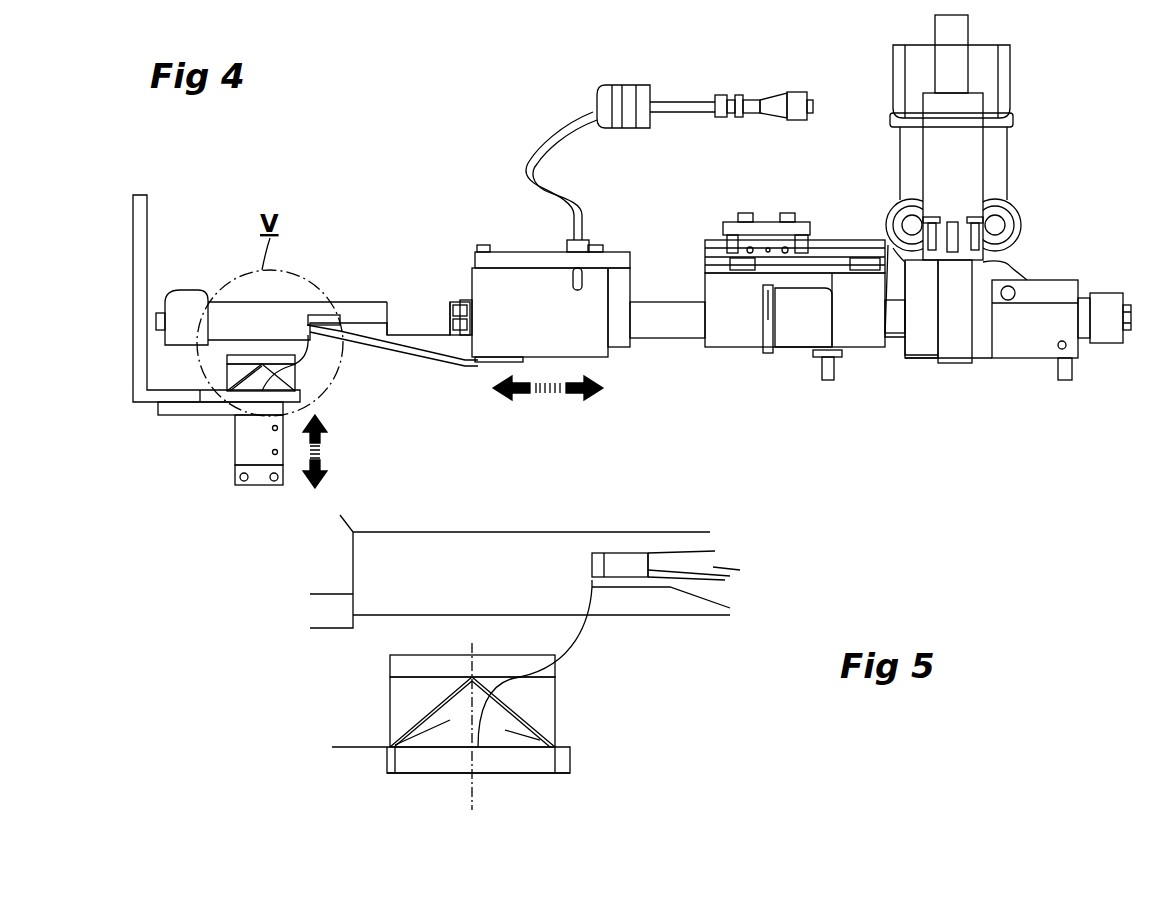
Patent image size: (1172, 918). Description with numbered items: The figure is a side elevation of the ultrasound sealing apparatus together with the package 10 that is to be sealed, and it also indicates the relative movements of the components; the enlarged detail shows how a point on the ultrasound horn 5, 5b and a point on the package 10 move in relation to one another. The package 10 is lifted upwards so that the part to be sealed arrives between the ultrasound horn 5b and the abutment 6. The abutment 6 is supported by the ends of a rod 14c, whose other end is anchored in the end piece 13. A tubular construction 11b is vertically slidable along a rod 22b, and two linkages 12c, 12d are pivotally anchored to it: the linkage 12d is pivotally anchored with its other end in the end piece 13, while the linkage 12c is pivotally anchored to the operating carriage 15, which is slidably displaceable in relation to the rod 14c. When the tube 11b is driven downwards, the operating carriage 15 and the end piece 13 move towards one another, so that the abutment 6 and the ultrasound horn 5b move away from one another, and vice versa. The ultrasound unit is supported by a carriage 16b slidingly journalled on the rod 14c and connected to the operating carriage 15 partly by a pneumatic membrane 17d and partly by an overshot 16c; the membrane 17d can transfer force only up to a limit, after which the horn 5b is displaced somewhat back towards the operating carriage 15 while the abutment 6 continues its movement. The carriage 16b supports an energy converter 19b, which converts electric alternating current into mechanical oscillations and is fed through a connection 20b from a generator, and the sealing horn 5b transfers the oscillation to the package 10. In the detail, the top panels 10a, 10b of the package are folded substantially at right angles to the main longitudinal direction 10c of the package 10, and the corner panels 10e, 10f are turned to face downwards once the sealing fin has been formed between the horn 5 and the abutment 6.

In FIG. 5, the ultrasound horn 5 is at (715, 567).
In FIG. 4, the ultrasound horn 5b is at (415, 312).
In FIG. 4, the abutment 6 is at (192, 307).
In FIG. 5, the abutment 6 is at (342, 563).
In FIG. 4, the package 10 is at (230, 372).
In FIG. 5, the package 10 is at (367, 680).
In FIG. 5, the top panel 10a is at (552, 705).
In FIG. 5, the top panel 10b is at (392, 705).
In FIG. 5, the main longitudinal direction 10c is at (482, 788).
In FIG. 5, the corner panel 10e is at (507, 730).
In FIG. 5, the corner panel 10f is at (450, 720).
In FIG. 4, the tubular construction 11b is at (950, 188).
In FIG. 4, the linkage 12c is at (890, 248).
In FIG. 4, the linkage 12d is at (1012, 257).
In FIG. 4, the end piece 13 is at (1100, 320).
In FIG. 4, the rod 14c is at (667, 320).
In FIG. 4, the operating carriage 15 is at (795, 330).
In FIG. 4, the carriage 16b is at (733, 335).
In FIG. 4, the overshot 16c is at (855, 330).
In FIG. 4, the pneumatic membrane 17d is at (765, 357).
In FIG. 4, the energy converter 19b is at (523, 295).
In FIG. 4, the connection 20b is at (787, 110).
In FIG. 4, the rod 22b is at (952, 343).